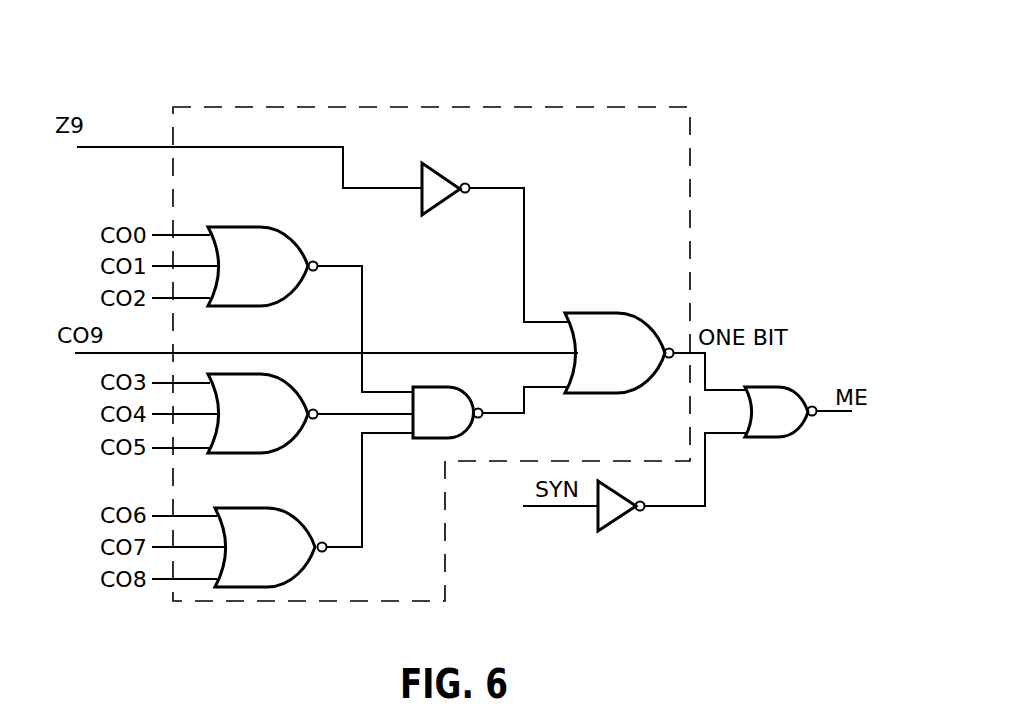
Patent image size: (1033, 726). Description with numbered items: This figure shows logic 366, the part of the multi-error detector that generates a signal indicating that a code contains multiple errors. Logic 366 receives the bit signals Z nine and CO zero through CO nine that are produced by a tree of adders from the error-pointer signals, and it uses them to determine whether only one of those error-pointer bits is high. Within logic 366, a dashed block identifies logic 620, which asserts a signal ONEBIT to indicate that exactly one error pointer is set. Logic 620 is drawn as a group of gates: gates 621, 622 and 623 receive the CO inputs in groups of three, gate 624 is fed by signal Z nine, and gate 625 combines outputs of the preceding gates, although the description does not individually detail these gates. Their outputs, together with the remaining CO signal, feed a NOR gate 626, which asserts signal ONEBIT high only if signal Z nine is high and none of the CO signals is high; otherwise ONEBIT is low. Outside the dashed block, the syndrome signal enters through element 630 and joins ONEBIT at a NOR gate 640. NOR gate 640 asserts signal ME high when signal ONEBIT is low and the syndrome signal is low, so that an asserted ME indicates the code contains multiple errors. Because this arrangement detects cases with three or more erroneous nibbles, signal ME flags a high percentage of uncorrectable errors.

The logic 366 is at (718, 48).
The logic 620 is at (630, 107).
The NOR gate (CO0-CO2) 621 is at (277, 230).
The NOR gate (CO3-CO5) 622 is at (294, 393).
The NOR gate (CO6-CO8) 623 is at (307, 488).
The inverter (Z9) 624 is at (443, 172).
The NAND gate 625 is at (462, 387).
The NOR gate 626 is at (603, 312).
The inverter (SYN) 630 is at (622, 518).
The NOR gate 640 is at (797, 390).